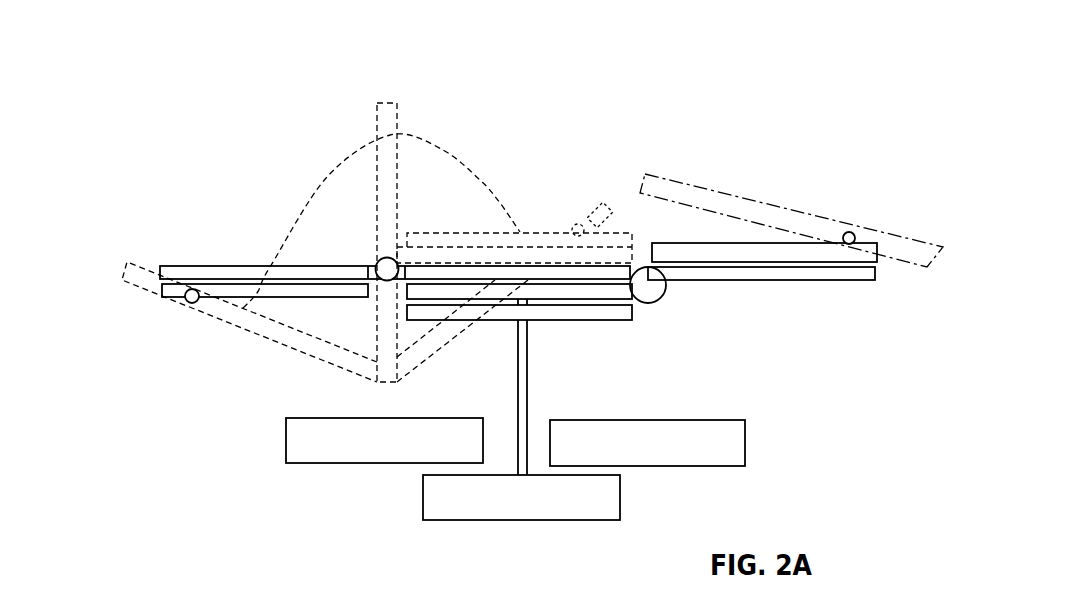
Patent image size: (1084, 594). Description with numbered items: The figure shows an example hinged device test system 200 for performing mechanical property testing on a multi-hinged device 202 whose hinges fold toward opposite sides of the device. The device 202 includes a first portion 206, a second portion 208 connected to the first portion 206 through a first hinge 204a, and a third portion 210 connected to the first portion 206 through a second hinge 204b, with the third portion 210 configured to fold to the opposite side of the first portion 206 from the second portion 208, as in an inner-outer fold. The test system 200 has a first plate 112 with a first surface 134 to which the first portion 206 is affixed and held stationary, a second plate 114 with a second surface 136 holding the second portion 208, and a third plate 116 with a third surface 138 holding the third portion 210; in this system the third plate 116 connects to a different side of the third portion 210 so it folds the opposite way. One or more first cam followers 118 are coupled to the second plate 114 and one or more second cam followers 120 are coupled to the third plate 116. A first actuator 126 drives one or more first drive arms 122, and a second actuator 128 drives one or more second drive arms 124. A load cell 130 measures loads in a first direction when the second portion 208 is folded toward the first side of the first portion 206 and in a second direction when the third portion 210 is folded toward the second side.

The hinged device test system 200 is at (126, 73).
The multi-hinged device 202 is at (127, 212).
The first plate 112 is at (633, 243).
The second plate 114 is at (230, 297).
The third plate 116 is at (738, 253).
The first cam follower 118 is at (188, 303).
The second cam follower 120 is at (851, 232).
The first drive arm 122 is at (385, 103).
The second drive arm 124 is at (928, 242).
The first actuator 126 is at (352, 417).
The second actuator 128 is at (617, 420).
The load cell 130 is at (552, 522).
The first surface 134 is at (433, 285).
The second surface 136 is at (237, 282).
The third surface 138 is at (750, 265).
The first hinge 204a is at (383, 258).
The second hinge 204b is at (648, 303).
The first portion 206 is at (478, 278).
The second portion 208 is at (208, 266).
The third portion 210 is at (850, 282).